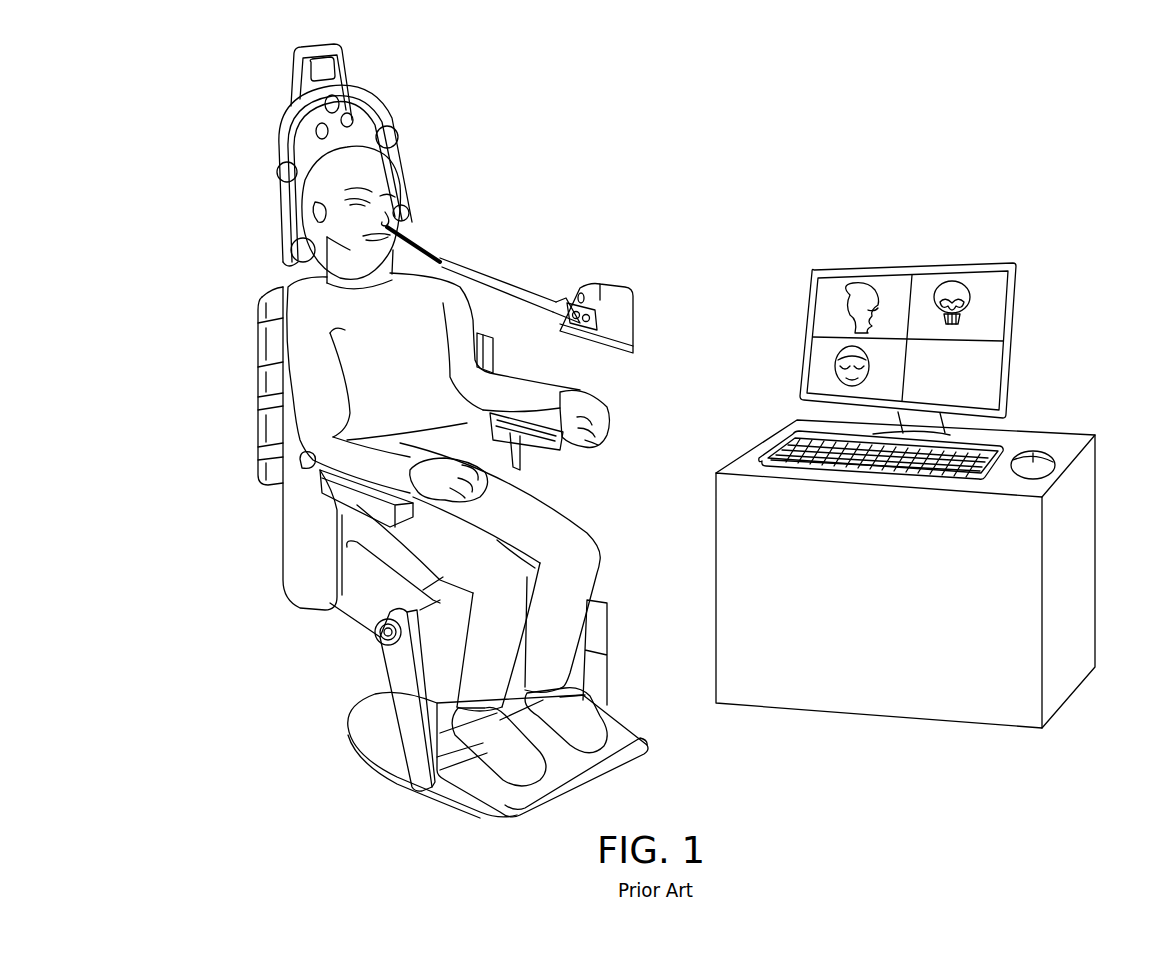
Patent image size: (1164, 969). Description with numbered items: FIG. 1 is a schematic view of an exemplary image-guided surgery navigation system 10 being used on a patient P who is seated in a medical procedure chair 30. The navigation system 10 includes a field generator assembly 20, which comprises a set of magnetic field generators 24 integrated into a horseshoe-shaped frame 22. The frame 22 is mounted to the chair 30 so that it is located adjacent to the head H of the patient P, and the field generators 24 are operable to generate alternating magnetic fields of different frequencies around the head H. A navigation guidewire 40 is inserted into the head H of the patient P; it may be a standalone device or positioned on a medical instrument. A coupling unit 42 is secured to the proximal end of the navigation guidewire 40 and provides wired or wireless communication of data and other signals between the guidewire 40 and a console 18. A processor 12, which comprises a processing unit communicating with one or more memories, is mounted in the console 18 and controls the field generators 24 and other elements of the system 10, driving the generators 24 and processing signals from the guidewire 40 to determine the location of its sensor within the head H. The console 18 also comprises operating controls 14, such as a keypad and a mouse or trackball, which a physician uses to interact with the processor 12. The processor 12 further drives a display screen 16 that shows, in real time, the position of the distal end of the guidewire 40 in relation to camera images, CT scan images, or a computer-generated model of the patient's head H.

The IGS navigation system 10 is at (926, 148).
The processor 12 is at (776, 404).
The operating controls 14 is at (770, 445).
The display screen 16 is at (990, 262).
The console 18 is at (1076, 437).
The field generator assembly 20 is at (286, 126).
The horseshoe-shaped frame 22 is at (369, 98).
The magnetic field generators 24 is at (396, 130).
The chair 30 is at (268, 735).
The navigation guidewire 40 is at (444, 257).
The coupling unit 42 is at (622, 288).
The head H is at (373, 170).
The patient P is at (503, 156).